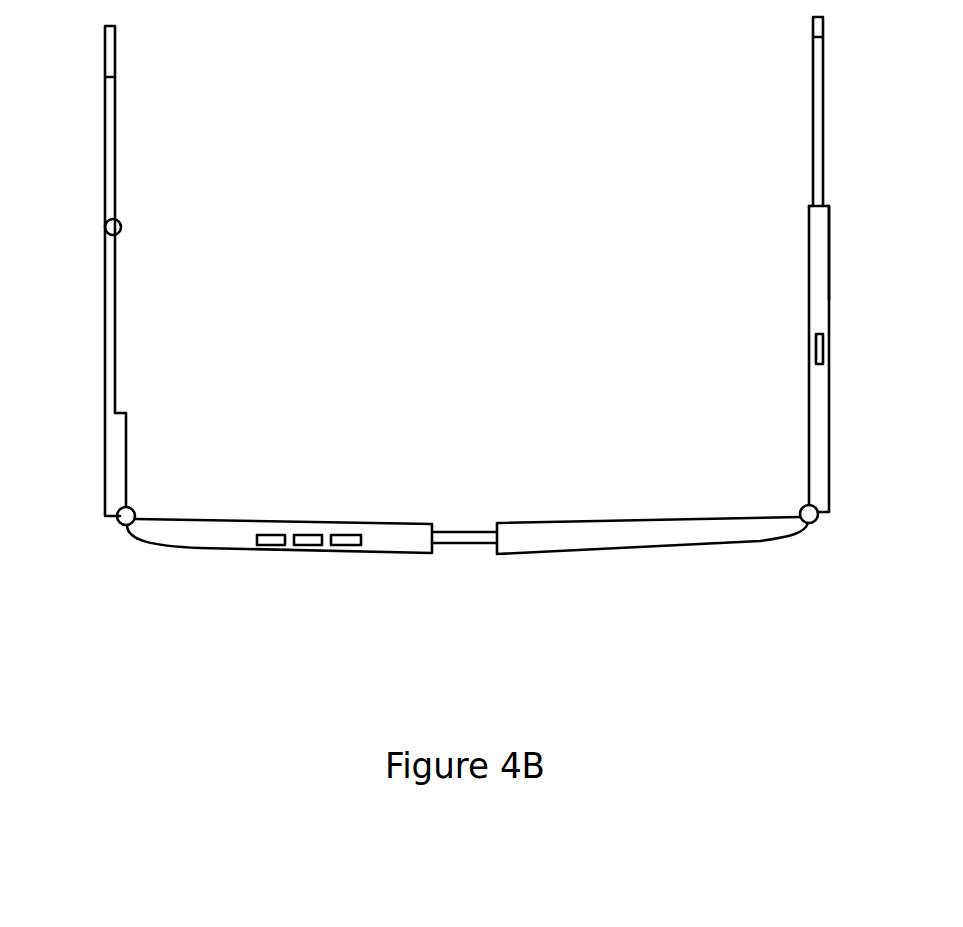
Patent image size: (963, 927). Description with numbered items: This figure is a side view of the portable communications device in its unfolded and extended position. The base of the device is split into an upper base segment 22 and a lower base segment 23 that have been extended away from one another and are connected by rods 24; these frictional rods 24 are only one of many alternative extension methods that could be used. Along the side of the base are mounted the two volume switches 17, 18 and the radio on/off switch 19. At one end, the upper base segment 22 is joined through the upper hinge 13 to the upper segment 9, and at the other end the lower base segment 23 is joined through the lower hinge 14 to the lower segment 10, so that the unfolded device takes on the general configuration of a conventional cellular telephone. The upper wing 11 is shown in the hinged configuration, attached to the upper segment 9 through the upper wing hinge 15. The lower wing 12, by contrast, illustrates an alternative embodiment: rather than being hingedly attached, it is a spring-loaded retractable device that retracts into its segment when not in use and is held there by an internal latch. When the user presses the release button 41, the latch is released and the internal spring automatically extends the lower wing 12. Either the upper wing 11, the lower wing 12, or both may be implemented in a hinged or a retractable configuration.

The upper segment 9 is at (111, 439).
The lower segment 10 is at (813, 232).
The upper wing 11 is at (104, 77).
The lower wing 12 is at (811, 37).
The upper hinge 13 is at (117, 523).
The lower hinge 14 is at (818, 520).
The upper wing hinge 15 is at (110, 226).
The volume switch 17 is at (262, 545).
The volume switch 18 is at (300, 545).
The radio on/off switch 19 is at (346, 545).
The upper base segment 22 is at (168, 528).
The lower base segment 23 is at (606, 528).
The rods 24 is at (457, 543).
The release button 41 is at (826, 354).